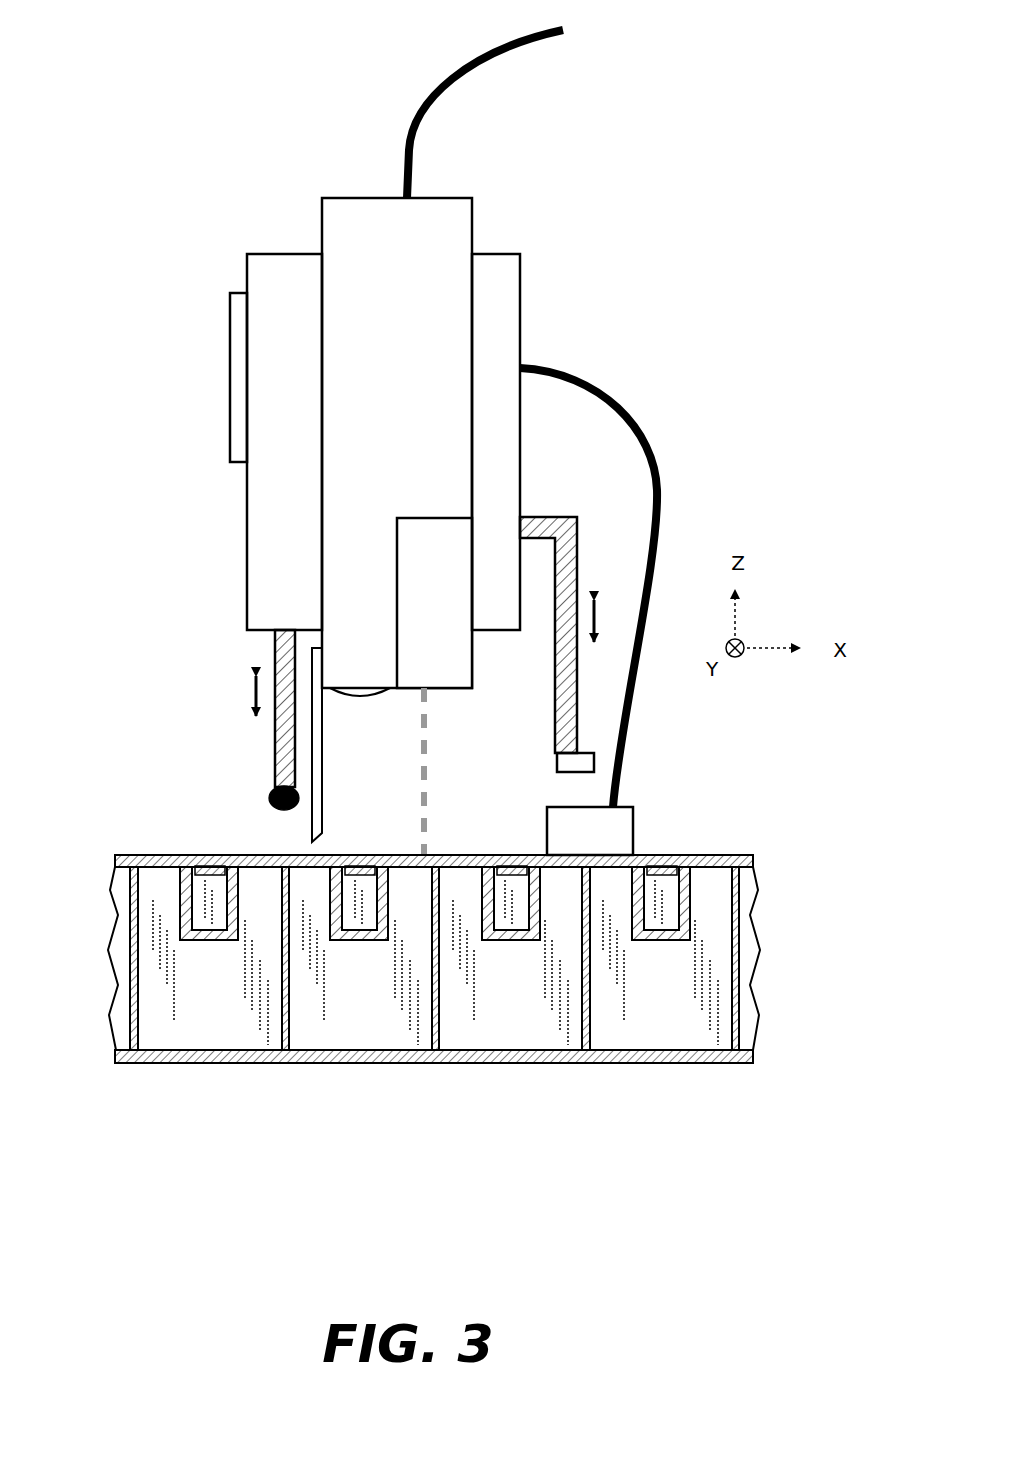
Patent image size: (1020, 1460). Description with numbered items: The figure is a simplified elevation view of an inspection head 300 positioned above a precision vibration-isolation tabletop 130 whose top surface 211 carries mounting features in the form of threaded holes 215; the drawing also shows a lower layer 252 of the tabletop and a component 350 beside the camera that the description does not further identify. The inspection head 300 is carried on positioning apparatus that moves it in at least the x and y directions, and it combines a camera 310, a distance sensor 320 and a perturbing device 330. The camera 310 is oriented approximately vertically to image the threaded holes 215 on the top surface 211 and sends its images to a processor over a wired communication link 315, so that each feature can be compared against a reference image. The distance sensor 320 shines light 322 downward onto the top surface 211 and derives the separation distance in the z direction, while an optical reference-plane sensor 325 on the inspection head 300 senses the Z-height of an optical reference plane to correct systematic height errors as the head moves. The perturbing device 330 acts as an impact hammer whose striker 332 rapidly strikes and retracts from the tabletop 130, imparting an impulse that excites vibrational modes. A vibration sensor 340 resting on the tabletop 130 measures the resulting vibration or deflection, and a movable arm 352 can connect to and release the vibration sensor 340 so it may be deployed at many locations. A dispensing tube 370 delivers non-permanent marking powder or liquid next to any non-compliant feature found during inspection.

The inspection head 300 is at (675, 100).
The wired communication link 315 is at (418, 100).
The camera 310 is at (397, 447).
The distance sensor 320 is at (434, 603).
The perturbing device 330 is at (284, 442).
The optical reference-plane sensor 325 is at (230, 367).
The actuator housing 350 is at (521, 330).
The movable arm 352 is at (540, 515).
The striker 332 is at (274, 783).
The dispensing tube 370 is at (312, 820).
The light 322 is at (430, 818).
The vibration sensor 340 is at (625, 805).
The precision vibration-isolation tabletop 130 is at (461, 947).
The top surface 211 is at (145, 853).
The bottom layer 252 is at (150, 1063).
The threaded holes 215 is at (660, 855).